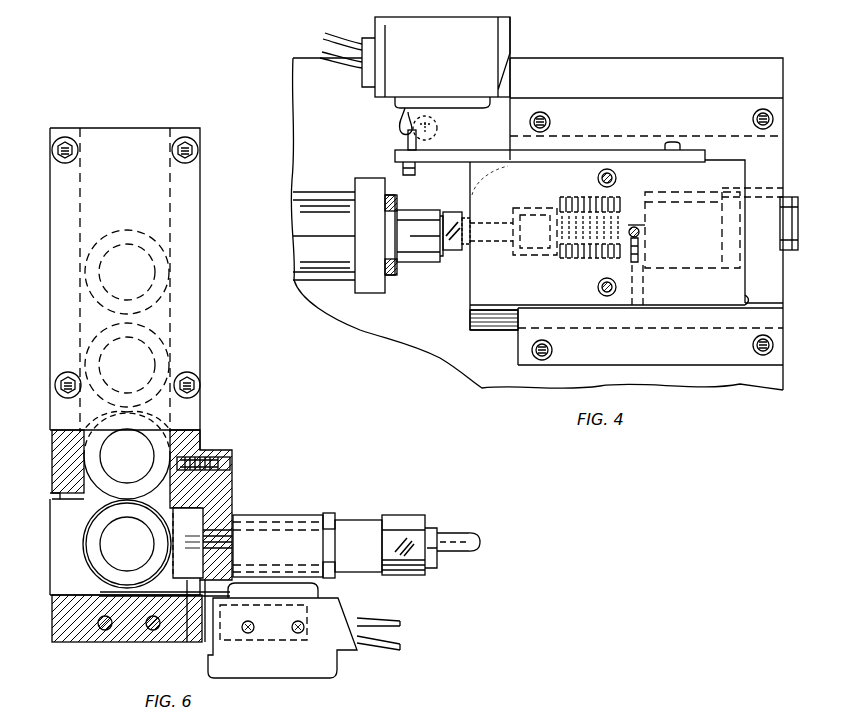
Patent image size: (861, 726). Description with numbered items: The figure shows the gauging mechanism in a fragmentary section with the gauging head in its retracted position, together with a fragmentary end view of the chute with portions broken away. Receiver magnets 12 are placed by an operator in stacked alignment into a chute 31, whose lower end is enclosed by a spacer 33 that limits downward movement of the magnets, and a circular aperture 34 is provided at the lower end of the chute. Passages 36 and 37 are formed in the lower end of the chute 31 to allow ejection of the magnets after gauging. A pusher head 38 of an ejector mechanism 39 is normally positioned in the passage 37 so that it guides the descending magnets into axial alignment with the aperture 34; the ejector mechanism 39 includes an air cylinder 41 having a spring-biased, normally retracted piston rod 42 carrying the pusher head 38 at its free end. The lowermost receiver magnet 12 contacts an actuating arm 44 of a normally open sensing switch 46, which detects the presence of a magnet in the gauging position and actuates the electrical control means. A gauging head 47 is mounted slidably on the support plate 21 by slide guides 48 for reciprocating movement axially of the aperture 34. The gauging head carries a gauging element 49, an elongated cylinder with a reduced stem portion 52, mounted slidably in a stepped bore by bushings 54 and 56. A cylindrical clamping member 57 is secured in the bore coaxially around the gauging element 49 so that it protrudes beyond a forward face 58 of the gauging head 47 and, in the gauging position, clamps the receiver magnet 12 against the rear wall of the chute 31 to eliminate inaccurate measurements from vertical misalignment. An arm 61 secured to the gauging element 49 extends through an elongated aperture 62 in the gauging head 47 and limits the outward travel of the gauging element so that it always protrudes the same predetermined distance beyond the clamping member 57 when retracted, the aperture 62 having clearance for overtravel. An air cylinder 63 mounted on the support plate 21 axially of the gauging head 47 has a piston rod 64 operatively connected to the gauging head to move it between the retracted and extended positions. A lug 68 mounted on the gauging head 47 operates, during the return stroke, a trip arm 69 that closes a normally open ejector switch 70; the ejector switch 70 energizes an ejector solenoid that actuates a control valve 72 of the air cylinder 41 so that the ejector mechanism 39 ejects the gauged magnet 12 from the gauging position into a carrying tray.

In FIG. 6, the receiver magnet 12 is at (162, 352).
In FIG. 4, the support plate 21 is at (413, 345).
In FIG. 6, the chute 31 is at (210, 198).
In FIG. 6, the spacer 33 is at (60, 613).
In FIG. 6, the circular aperture 34 is at (84, 542).
In FIG. 6, the passage 36 is at (56, 499).
In FIG. 6, the passage 37 is at (215, 508).
In FIG. 6, the pusher head 38 is at (178, 530).
In FIG. 6, the ejector mechanism 39 is at (290, 516).
In FIG. 6, the air cylinder 41 is at (324, 516).
In FIG. 6, the piston rod 42 is at (230, 540).
In FIG. 6, the actuating arm 44 is at (188, 598).
In FIG. 6, the sensing switch 46 is at (342, 608).
In FIG. 4, the gauging head 47 is at (462, 292).
In FIG. 4, the slide guide 48 is at (637, 98).
In FIG. 4, the gauging element 49 is at (764, 291).
In FIG. 4, the reduced stem portion 52 is at (541, 256).
In FIG. 4, the bushing 54 is at (532, 212).
In FIG. 4, the bushing 56 is at (682, 198).
In FIG. 4, the cylindrical clamping member 57 is at (767, 194).
In FIG. 4, the forward face 58 is at (749, 306).
In FIG. 4, the arm 61 is at (641, 234).
In FIG. 4, the elongated aperture 62 is at (634, 226).
In FIG. 4, the air cylinder 63 is at (332, 196).
In FIG. 4, the piston rod 64 is at (446, 211).
In FIG. 4, the lug 68 is at (406, 145).
In FIG. 4, the trip arm 69 is at (434, 121).
In FIG. 4, the ejector switch 70 is at (375, 40).
In FIG. 6, the control valve 72 is at (402, 518).